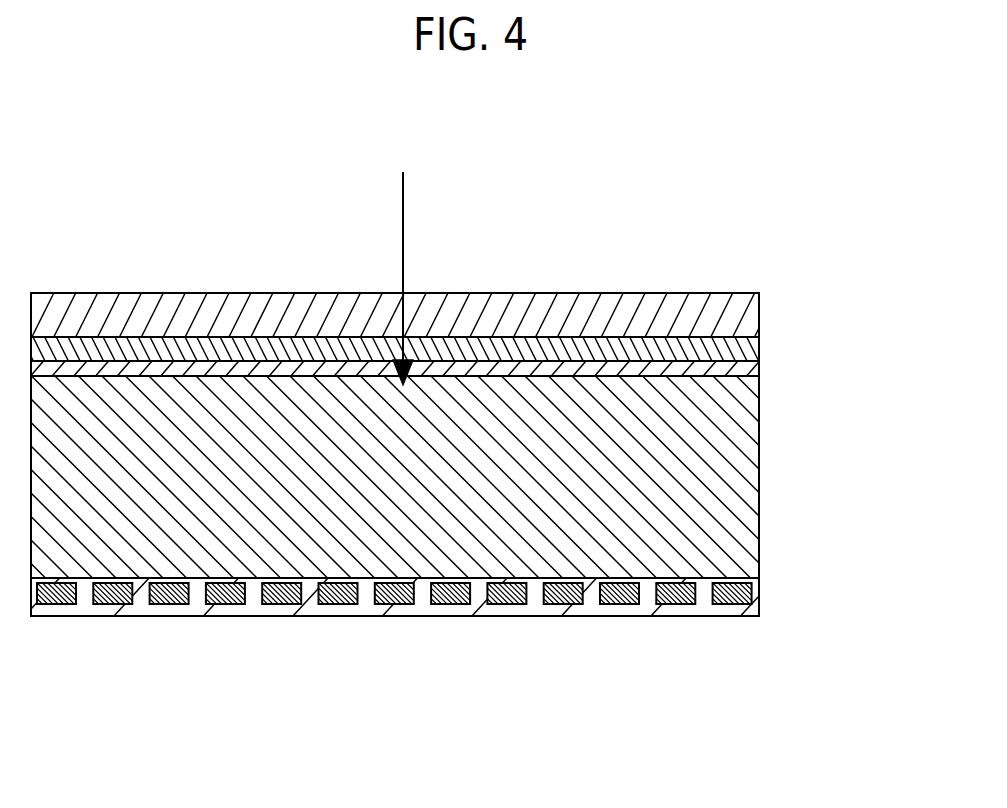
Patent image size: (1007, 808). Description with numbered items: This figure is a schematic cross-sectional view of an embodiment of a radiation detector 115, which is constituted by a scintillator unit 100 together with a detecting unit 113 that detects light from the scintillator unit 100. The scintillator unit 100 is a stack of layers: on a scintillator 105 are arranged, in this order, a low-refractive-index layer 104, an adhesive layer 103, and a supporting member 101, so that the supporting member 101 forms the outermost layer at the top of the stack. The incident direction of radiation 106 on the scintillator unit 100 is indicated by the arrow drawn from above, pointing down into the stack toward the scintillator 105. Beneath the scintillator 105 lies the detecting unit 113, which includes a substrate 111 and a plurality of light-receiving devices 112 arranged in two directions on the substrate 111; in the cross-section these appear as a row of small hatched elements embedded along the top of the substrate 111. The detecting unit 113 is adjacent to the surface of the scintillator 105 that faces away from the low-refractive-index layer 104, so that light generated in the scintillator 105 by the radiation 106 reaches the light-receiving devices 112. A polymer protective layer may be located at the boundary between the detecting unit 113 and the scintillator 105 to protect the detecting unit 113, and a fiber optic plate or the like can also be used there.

The scintillator unit 100 is at (877, 253).
The supporting member 101 is at (742, 312).
The adhesive layer 103 is at (743, 348).
The low-refractive-index layer 104 is at (735, 367).
The scintillator 105 is at (737, 486).
The radiation 106 is at (402, 264).
The substrate 111 is at (677, 608).
The light-receiving devices 112 is at (740, 597).
The detecting unit 113 is at (775, 703).
The radiation detector 115 is at (118, 216).